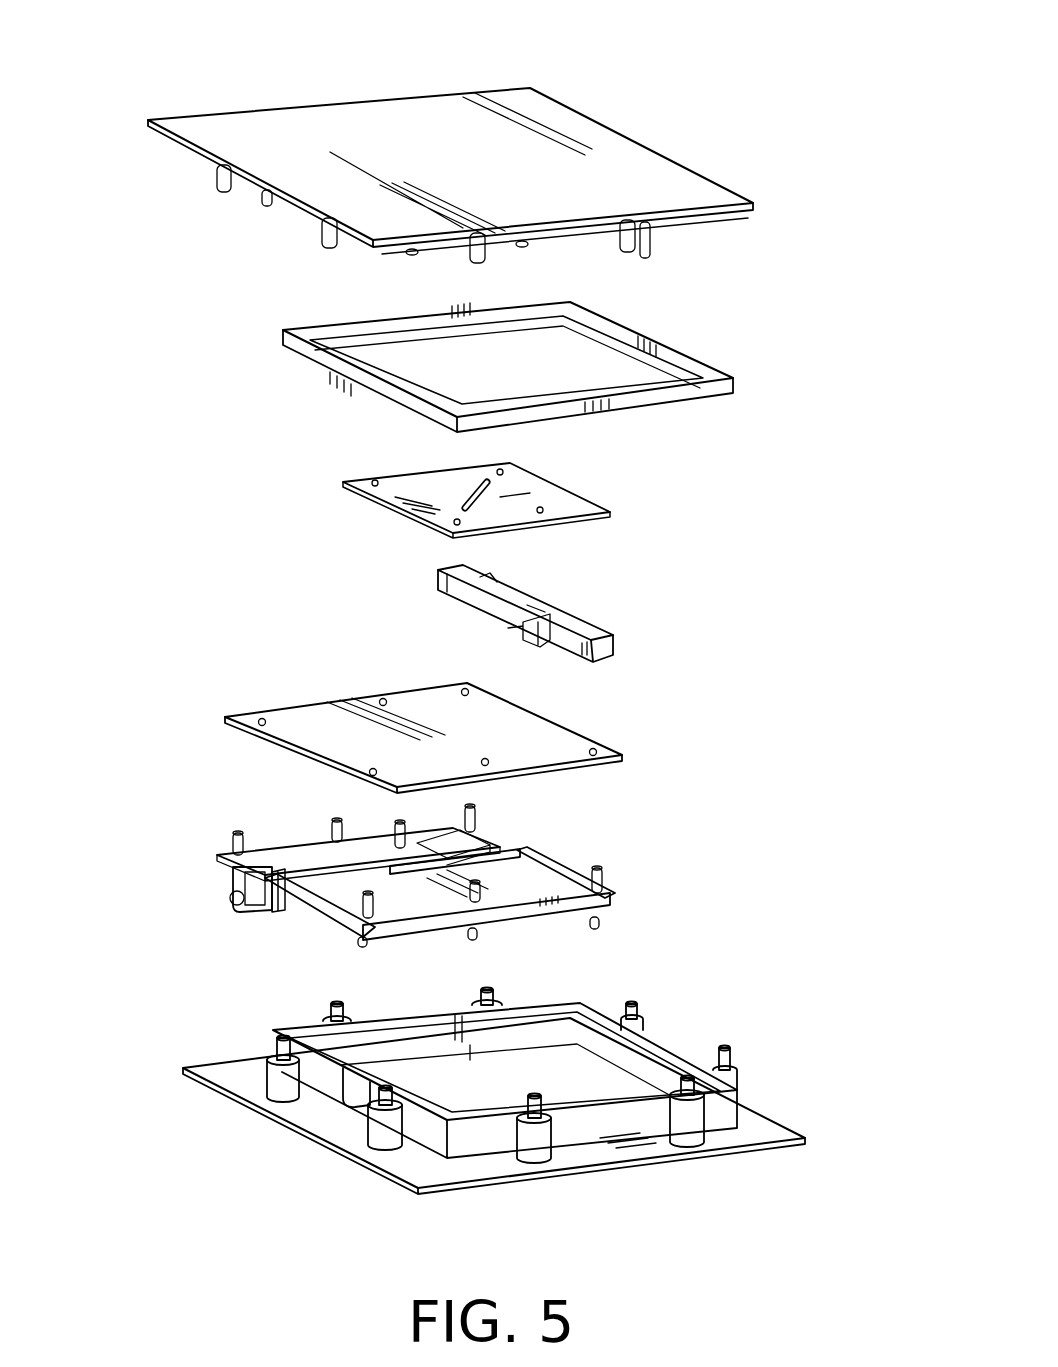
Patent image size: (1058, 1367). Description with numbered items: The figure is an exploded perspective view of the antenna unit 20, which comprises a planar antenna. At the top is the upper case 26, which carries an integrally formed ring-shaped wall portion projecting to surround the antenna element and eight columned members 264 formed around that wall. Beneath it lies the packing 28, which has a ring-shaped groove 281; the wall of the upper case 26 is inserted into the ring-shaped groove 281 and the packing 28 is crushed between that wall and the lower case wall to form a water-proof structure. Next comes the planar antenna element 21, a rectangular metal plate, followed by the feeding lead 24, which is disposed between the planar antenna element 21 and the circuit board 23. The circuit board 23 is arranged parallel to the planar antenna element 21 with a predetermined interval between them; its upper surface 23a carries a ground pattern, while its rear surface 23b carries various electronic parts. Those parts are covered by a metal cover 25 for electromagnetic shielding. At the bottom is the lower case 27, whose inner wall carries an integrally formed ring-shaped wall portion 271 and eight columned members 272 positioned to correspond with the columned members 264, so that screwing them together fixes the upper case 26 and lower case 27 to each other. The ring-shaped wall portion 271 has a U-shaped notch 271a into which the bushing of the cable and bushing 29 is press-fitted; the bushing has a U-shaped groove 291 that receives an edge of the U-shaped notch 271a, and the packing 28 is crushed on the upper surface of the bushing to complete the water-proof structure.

The antenna unit 20 is at (578, 79).
The upper case 26 is at (663, 153).
The columned members 264 is at (320, 233).
The packing 28 is at (690, 350).
The ring-shaped groove 281 is at (627, 323).
The planar antenna element 21 is at (577, 492).
The feeding lead 24 is at (503, 627).
The circuit board 23 is at (560, 723).
The upper surface 23a is at (293, 715).
The rear surface 23b is at (280, 745).
The metal cover 25 is at (610, 897).
The cable and bushing 29 is at (230, 900).
The U-shaped groove 291 is at (267, 913).
The lower case 27 is at (505, 1183).
The ring-shaped wall portion 271 is at (600, 1123).
The U-shaped notch 271a is at (327, 1090).
The columned members 272 is at (687, 1123).